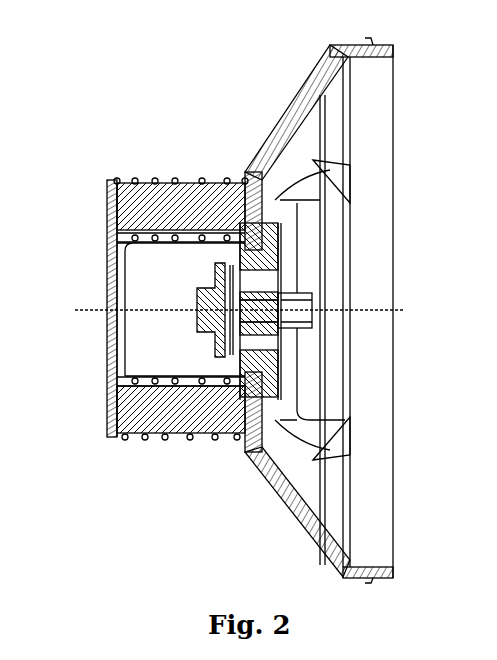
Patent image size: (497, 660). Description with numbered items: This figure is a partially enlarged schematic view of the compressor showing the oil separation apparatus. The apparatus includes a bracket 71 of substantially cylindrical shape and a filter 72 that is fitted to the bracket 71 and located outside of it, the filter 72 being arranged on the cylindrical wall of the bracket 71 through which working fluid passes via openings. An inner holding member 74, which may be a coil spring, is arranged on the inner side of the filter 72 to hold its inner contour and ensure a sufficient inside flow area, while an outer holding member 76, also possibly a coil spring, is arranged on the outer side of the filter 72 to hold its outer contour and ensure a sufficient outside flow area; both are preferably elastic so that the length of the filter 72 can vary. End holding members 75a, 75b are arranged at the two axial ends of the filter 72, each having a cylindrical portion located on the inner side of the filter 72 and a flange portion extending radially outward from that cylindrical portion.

The bracket 71 is at (107, 318).
The filter 72 is at (188, 200).
The inner holding member 74 is at (153, 383).
The end holding member 75a is at (110, 212).
The end holding member 75b is at (250, 222).
The outer holding member 76 is at (178, 180).